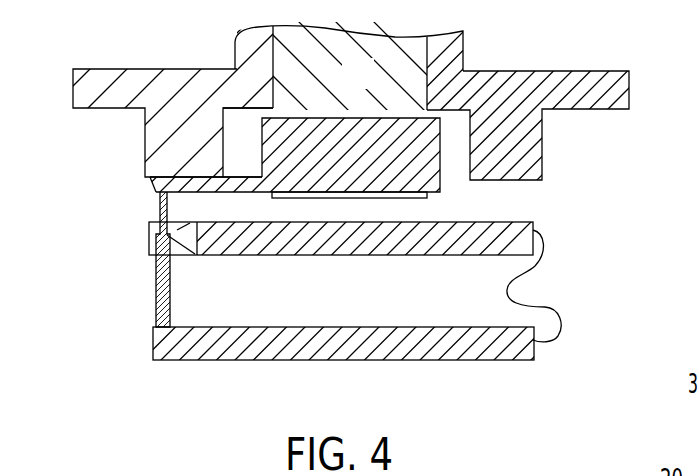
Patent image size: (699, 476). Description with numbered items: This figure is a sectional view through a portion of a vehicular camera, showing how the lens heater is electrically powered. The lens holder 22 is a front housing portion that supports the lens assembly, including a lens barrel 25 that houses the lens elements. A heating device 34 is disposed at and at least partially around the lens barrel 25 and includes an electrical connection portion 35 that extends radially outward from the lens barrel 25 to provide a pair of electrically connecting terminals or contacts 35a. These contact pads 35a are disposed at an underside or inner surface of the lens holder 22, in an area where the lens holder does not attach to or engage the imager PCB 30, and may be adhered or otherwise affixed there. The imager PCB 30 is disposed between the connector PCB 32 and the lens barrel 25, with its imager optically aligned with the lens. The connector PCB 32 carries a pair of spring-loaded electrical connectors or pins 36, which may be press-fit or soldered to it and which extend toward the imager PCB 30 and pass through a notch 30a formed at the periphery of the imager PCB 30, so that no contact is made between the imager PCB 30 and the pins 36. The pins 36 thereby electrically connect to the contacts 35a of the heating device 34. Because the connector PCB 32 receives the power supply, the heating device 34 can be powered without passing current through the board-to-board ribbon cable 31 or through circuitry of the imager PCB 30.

The lens holder 22 is at (603, 92).
The lens barrel 25 is at (371, 91).
The heating device 34 is at (400, 140).
The electrical connection portion 35 is at (238, 177).
The contacts 35a is at (165, 185).
The imager PCB 30 is at (507, 232).
The notch 30a is at (185, 232).
The spring-loaded pins 36 is at (156, 307).
The board-to-board ribbon cable 31 is at (560, 313).
The connector PCB 32 is at (280, 342).